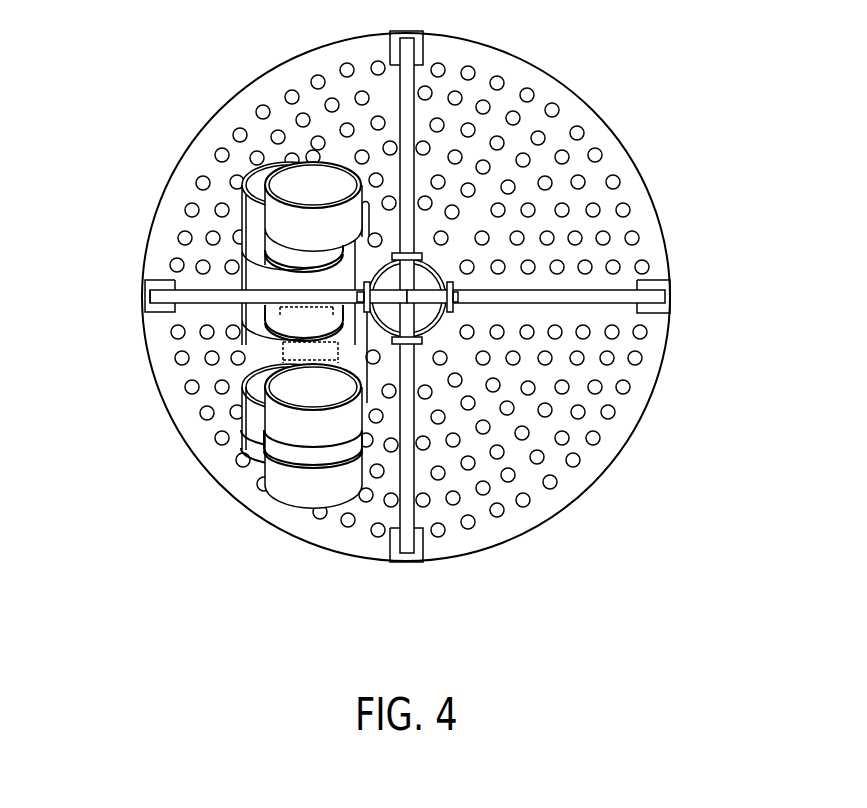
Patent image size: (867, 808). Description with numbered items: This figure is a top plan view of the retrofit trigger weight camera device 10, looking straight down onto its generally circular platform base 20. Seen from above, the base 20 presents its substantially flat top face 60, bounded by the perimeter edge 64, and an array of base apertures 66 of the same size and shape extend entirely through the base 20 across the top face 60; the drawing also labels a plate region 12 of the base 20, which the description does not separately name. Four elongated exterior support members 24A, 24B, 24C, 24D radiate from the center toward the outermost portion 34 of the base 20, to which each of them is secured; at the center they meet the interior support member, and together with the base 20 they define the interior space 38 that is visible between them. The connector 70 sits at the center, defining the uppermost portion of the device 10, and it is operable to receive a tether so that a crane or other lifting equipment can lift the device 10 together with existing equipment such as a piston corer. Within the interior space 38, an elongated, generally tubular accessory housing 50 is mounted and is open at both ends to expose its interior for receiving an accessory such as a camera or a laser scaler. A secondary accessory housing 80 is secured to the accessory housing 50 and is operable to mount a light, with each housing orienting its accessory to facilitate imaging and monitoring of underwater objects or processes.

The retrofit trigger weight camera device 10 is at (185, 87).
The perforated plate 12 is at (684, 330).
The platform base 20 is at (407, 330).
The exterior support member 24A is at (410, 80).
The exterior support member 24B is at (592, 297).
The exterior support member 24C is at (405, 510).
The exterior support member 24D is at (222, 293).
The outermost portion 34 is at (166, 326).
The interior space 38 is at (553, 427).
The accessory housing 50 is at (283, 350).
The top face 60 is at (265, 350).
The perimeter edge 64 is at (225, 490).
The base apertures 66 is at (598, 152).
The connector 70 is at (408, 312).
The secondary accessory housing 80 is at (292, 482).